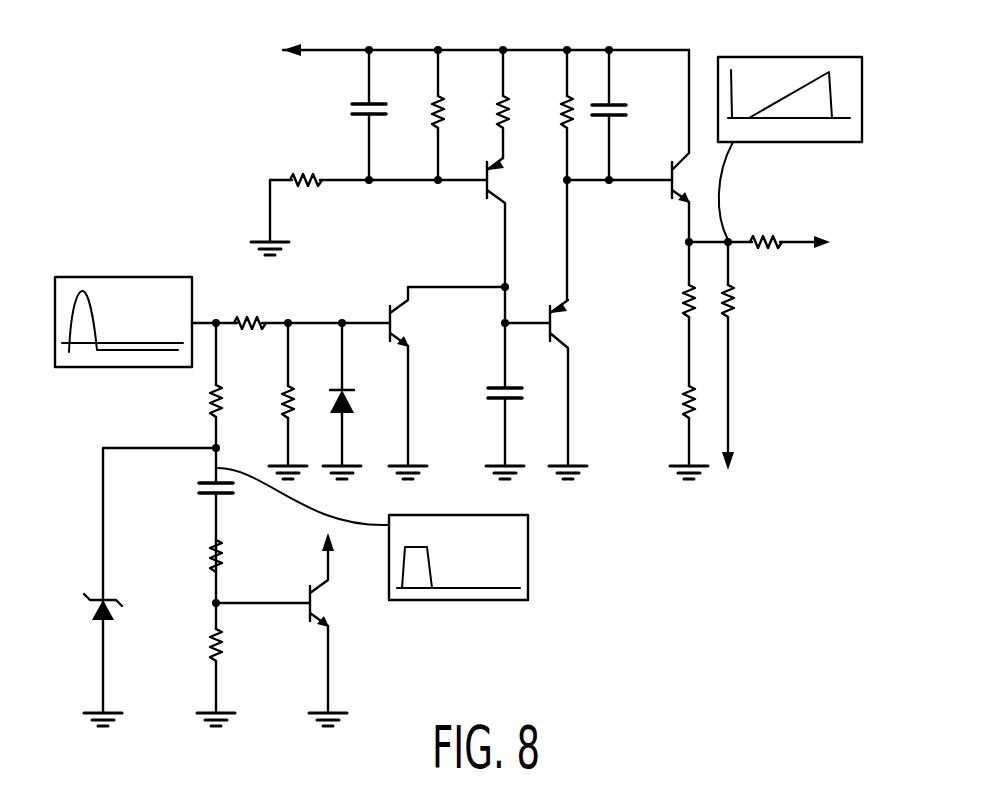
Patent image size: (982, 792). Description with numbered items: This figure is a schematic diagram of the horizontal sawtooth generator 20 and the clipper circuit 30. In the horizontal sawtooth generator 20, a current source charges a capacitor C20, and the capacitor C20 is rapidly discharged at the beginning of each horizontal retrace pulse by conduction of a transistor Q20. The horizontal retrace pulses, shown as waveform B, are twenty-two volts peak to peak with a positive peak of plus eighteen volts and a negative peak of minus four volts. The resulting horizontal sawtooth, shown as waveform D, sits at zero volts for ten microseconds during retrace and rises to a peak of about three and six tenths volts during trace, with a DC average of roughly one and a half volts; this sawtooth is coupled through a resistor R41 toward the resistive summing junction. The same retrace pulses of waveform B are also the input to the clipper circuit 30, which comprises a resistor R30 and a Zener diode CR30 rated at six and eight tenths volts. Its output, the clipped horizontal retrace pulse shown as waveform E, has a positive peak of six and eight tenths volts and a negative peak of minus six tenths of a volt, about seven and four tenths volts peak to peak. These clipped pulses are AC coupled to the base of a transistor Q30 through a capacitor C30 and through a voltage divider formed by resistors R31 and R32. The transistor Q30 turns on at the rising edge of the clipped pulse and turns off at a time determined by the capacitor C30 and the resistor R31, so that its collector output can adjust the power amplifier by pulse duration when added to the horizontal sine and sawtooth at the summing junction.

The horizontal sawtooth generator 20 is at (400, 247).
The clipper circuit 30 is at (155, 424).
The horizontal retrace pulse waveform B is at (192, 287).
The horizontal sawtooth waveform D is at (728, 56).
The clipped horizontal retrace waveform E is at (528, 531).
The transistor Q20 is at (447, 383).
The capacitor C20 is at (478, 401).
The resistor R41 is at (766, 210).
The resistor R30 is at (195, 385).
The capacitor C30 is at (192, 494).
The resistor R31 is at (236, 568).
The resistor R32 is at (236, 658).
The Zener diode CR30 is at (129, 614).
The transistor Q30 is at (289, 629).